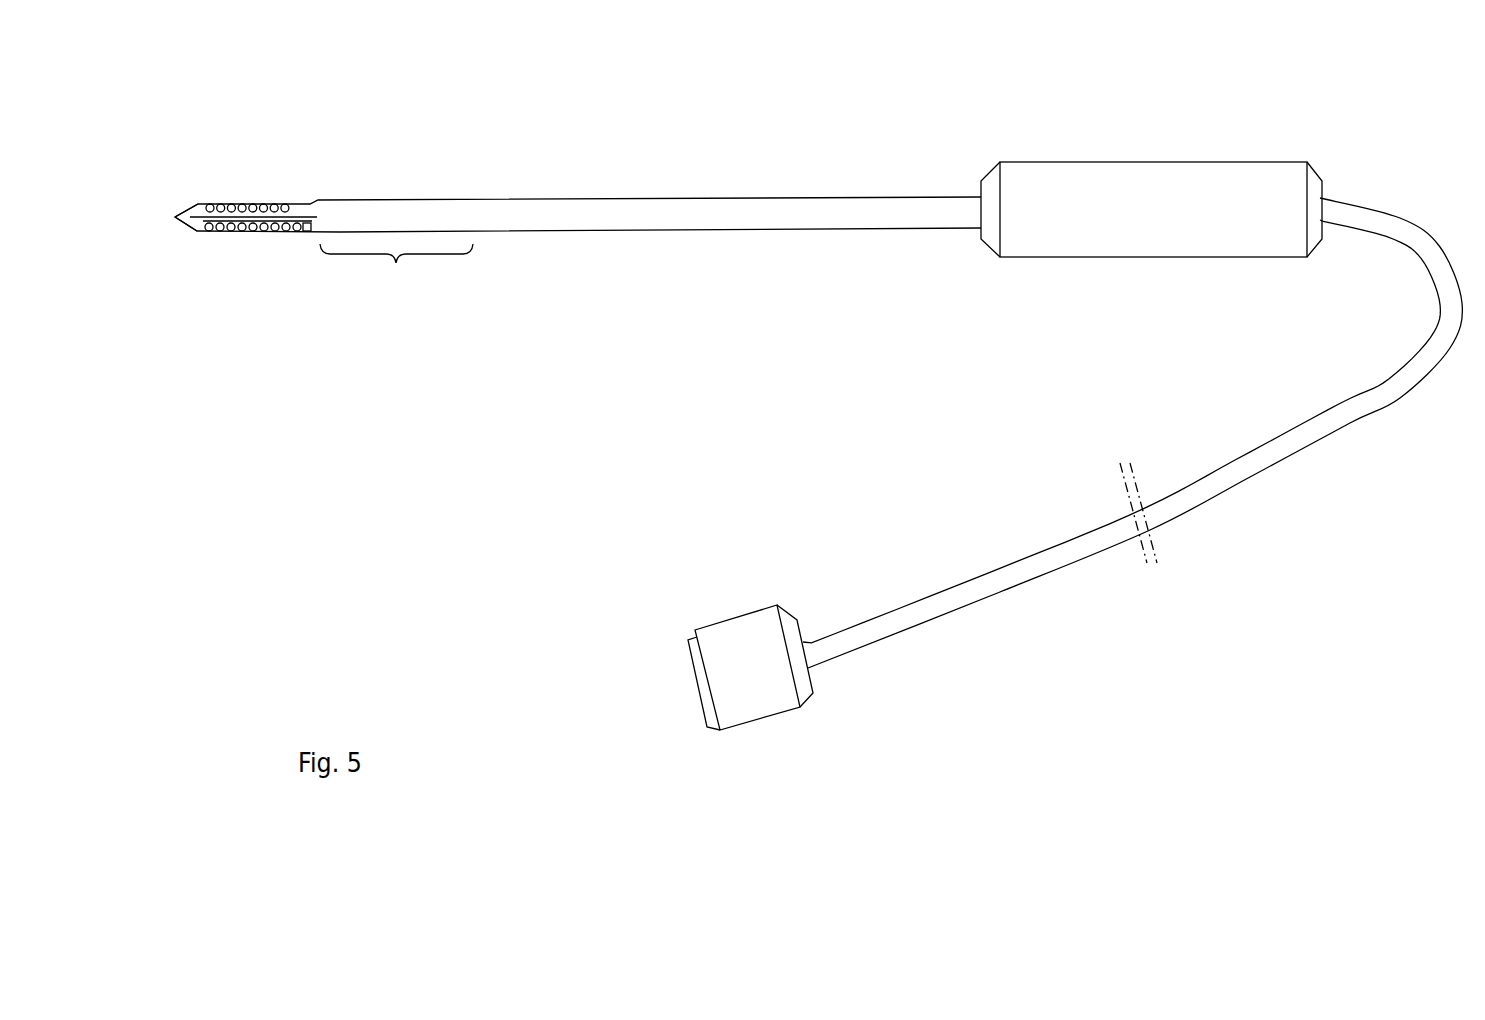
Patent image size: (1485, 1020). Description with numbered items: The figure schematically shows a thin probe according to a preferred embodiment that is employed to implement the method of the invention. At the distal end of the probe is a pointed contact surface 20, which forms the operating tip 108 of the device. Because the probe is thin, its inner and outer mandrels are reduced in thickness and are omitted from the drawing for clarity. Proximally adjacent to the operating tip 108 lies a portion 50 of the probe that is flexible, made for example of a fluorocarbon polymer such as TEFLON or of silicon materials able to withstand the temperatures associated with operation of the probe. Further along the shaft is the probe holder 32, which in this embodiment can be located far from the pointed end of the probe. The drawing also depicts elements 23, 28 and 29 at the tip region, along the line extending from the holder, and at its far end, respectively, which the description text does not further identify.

The contact surface 20 is at (177, 215).
The operating tip 108 is at (198, 235).
The coil electrode 23 is at (247, 233).
The flexible portion 50 is at (396, 276).
The probe holder 32 is at (1145, 175).
The cable 28 is at (1268, 473).
The connector 29 is at (780, 717).